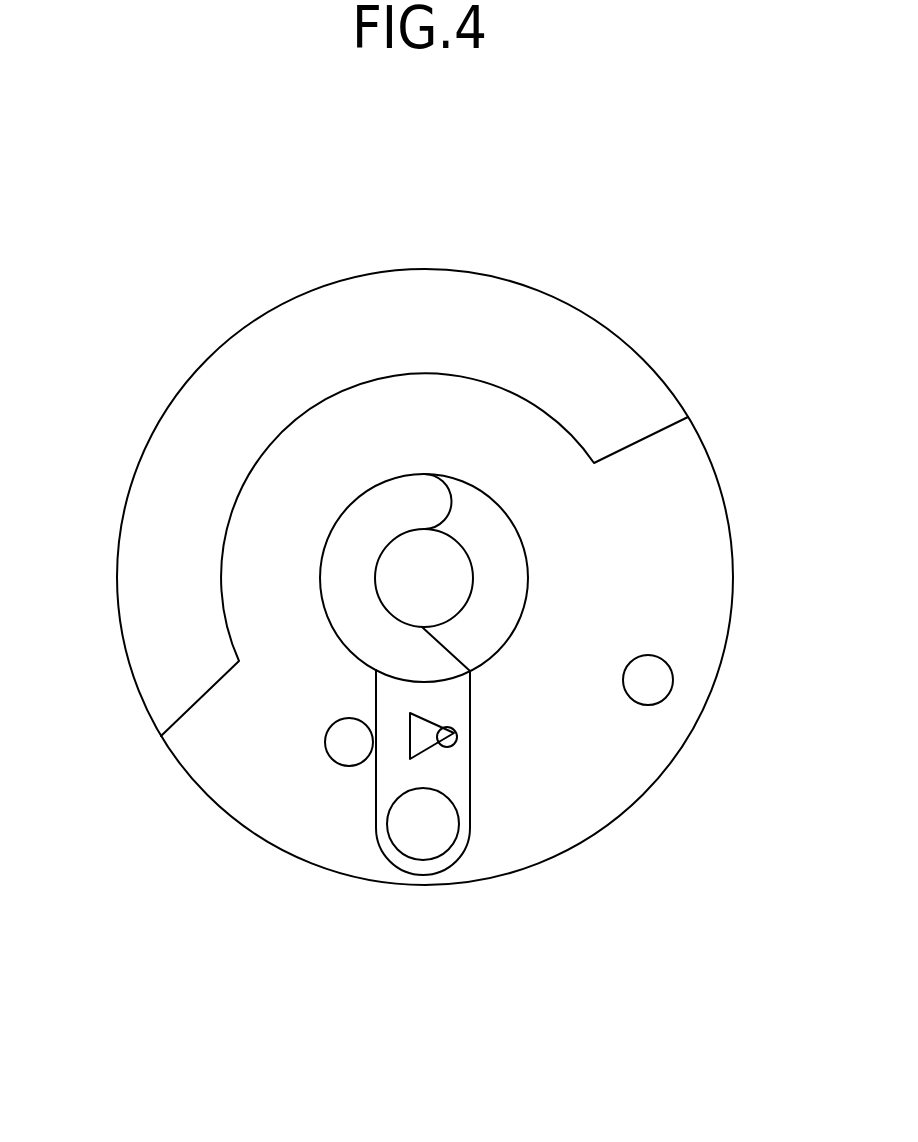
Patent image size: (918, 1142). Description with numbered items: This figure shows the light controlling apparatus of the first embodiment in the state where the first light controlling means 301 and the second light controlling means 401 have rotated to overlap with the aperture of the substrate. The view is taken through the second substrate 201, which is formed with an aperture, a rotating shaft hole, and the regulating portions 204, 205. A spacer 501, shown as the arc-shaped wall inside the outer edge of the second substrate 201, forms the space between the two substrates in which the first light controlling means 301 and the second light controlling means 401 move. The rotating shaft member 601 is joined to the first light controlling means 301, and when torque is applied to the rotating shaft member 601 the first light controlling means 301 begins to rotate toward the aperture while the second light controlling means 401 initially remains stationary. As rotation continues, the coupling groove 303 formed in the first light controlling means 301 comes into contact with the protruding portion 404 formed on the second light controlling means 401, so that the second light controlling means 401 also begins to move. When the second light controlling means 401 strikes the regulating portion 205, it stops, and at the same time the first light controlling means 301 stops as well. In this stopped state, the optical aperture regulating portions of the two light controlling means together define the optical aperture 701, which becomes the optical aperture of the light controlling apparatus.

The second substrate 201 is at (668, 499).
The spacer 501 is at (605, 370).
The second light controlling means 401 is at (497, 582).
The optical aperture 701 is at (413, 558).
The first light controlling means 301 is at (342, 573).
The coupling groove 303 is at (417, 737).
The protruding portion 404 is at (455, 729).
The rotating shaft member 601 is at (457, 825).
The regulating portion 205 is at (352, 752).
The regulating portion 204 is at (633, 693).